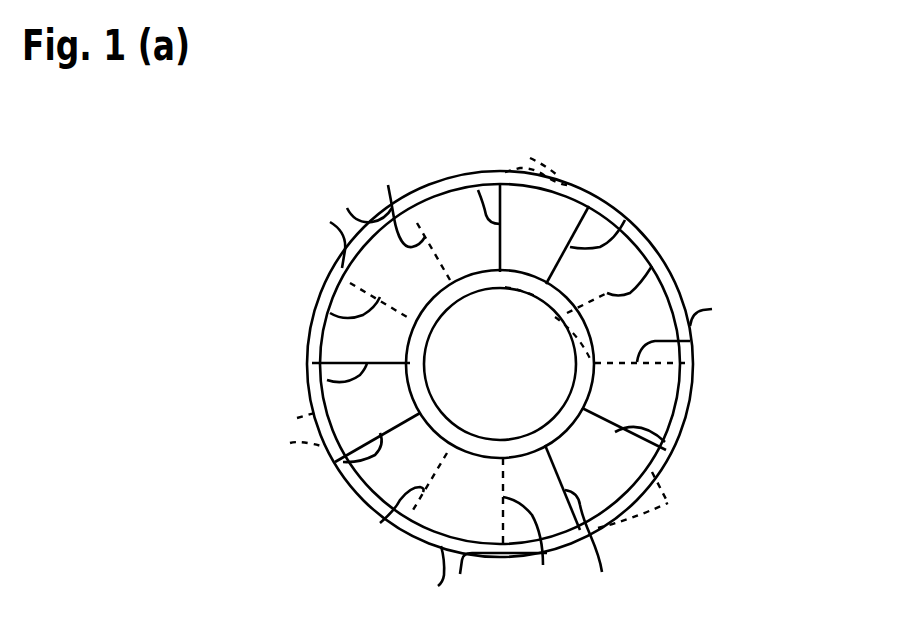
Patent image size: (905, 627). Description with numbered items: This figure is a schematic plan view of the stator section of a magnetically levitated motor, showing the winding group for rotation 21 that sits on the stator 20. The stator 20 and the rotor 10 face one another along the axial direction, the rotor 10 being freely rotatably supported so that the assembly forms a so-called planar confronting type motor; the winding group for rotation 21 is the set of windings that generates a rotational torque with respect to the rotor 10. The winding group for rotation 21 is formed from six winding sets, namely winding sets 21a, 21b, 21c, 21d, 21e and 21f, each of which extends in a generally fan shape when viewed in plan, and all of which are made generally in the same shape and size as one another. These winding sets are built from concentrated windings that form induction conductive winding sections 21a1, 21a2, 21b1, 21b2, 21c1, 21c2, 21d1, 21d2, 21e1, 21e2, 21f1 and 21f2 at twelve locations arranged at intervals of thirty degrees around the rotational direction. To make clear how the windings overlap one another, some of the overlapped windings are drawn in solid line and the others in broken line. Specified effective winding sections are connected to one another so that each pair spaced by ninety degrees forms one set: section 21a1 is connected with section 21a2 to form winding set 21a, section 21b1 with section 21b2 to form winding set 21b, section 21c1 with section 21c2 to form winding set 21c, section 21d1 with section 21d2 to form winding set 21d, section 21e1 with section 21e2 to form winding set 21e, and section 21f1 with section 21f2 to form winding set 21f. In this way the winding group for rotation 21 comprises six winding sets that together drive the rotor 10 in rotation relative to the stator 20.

The rotor 10 is at (562, 204).
The stator 20 is at (708, 402).
The winding group for rotation 21 is at (316, 256).
The winding set 21a is at (306, 255).
The winding set 21b is at (286, 461).
The winding set 21c is at (442, 578).
The winding set 21d is at (709, 502).
The winding set 21e is at (672, 283).
The winding set 21f is at (555, 148).
The induction conductive winding section 21a1 is at (478, 190).
The induction conductive winding section 21a2 is at (325, 380).
The induction conductive winding section 21b1 is at (320, 307).
The induction conductive winding section 21b2 is at (380, 523).
The induction conductive winding section 21c1 is at (347, 483).
The induction conductive winding section 21c2 is at (602, 572).
The induction conductive winding section 21d1 is at (543, 565).
The induction conductive winding section 21d2 is at (690, 341).
The induction conductive winding section 21e1 is at (672, 455).
The induction conductive winding section 21e2 is at (625, 220).
The induction conductive winding section 21f1 is at (652, 266).
The induction conductive winding section 21f2 is at (388, 185).